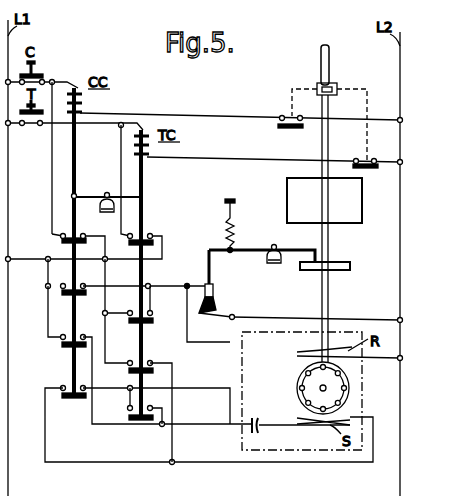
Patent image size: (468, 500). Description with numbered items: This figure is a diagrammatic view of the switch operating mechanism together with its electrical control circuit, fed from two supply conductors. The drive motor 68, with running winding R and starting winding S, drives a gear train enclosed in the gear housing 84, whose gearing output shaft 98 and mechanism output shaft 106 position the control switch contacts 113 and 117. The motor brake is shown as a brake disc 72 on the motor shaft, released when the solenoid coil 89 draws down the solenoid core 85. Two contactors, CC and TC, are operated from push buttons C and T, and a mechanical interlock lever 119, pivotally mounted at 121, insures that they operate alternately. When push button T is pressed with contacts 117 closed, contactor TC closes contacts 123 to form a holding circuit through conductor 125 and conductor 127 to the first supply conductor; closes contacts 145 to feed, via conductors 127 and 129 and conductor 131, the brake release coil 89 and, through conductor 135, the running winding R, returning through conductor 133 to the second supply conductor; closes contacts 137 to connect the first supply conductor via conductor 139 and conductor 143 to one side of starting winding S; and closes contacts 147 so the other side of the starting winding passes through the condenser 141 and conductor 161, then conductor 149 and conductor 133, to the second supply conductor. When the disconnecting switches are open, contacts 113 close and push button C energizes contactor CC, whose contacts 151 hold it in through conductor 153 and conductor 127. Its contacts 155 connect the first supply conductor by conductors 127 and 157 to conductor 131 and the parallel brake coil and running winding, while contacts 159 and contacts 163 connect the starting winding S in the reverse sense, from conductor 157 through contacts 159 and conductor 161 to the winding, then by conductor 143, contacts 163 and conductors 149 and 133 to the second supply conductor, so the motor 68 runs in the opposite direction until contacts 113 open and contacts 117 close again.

The drive motor 68 is at (299, 382).
The brake disc 72 is at (349, 267).
The gear housing 84 is at (344, 224).
The solenoid core 85 is at (213, 287).
The solenoid coil 89 is at (216, 296).
The gearing output shaft 98 is at (322, 141).
The mechanism output shaft 106 is at (321, 67).
The contacts 113 is at (281, 116).
The contacts 117 is at (372, 160).
The mechanical interlock lever 119 is at (88, 194).
The pivot 121 is at (110, 213).
The contacts 123 is at (148, 235).
The conductor 125 is at (120, 140).
The conductor 127 is at (45, 258).
The conductor 129 is at (106, 325).
The conductor 131 is at (163, 286).
The conductor 133 is at (279, 318).
The conductor 135 is at (222, 343).
The contacts 137 is at (148, 362).
The conductor 139 is at (175, 410).
The condenser 141 is at (263, 422).
The conductor 143 is at (238, 464).
The contacts 145 is at (149, 314).
The contacts 147 is at (128, 409).
The conductor 149 is at (229, 373).
The contacts 151 is at (58, 232).
The conductor 153 is at (50, 157).
The contacts 155 is at (62, 283).
The conductor 157 is at (47, 305).
The contacts 159 is at (62, 336).
The conductor 161 is at (122, 425).
The contacts 163 is at (62, 382).